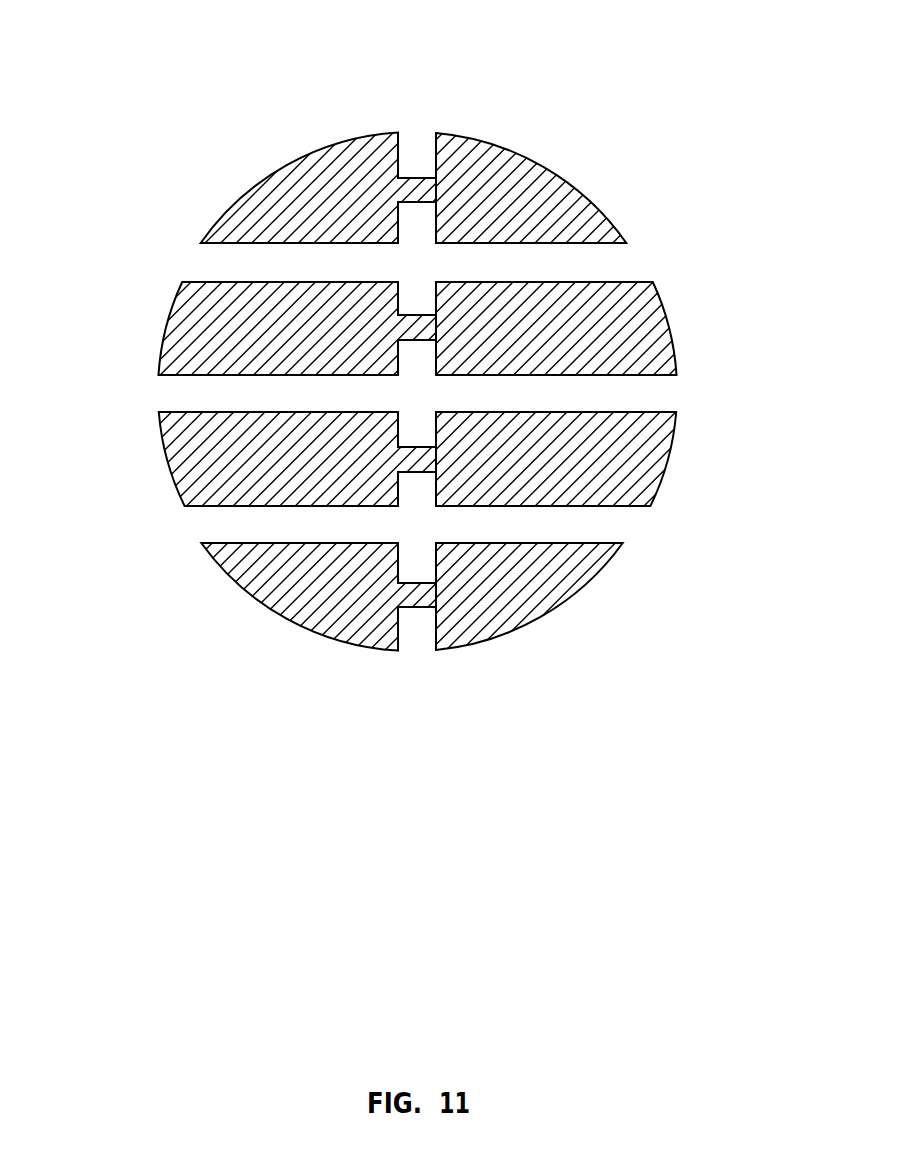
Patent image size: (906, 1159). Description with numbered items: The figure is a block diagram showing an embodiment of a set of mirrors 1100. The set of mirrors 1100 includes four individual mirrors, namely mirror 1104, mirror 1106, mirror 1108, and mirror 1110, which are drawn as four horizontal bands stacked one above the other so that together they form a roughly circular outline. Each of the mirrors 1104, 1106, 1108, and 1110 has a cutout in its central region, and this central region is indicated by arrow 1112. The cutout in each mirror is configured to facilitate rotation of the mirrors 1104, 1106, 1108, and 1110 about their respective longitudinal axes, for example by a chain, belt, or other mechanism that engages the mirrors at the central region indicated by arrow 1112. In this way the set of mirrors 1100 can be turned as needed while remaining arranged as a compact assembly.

The mirrors 1100 is at (163, 50).
The mirror 1104 is at (542, 181).
The mirror 1106 is at (658, 310).
The mirror 1108 is at (658, 450).
The mirror 1110 is at (554, 598).
The arrow indicating cutout 1112 is at (426, 100).